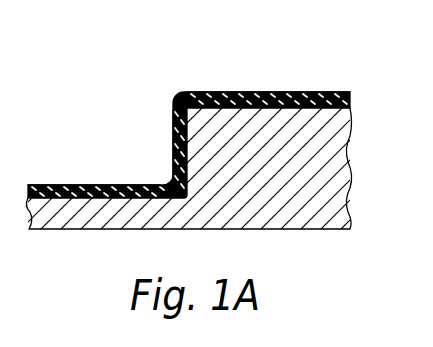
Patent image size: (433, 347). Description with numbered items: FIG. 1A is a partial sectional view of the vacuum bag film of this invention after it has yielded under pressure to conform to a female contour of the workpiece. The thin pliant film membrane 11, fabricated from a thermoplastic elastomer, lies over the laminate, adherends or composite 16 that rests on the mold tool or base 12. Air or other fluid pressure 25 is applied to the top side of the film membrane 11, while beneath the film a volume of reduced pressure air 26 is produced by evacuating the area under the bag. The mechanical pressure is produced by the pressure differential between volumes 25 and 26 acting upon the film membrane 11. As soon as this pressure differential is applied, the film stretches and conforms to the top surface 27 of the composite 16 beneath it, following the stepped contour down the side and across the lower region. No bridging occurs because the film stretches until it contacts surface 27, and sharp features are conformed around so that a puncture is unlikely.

The mold tool 12 is at (341, 155).
The top surface 27 is at (275, 92).
The volume of reduced pressure air 26 is at (349, 102).
The film membrane 11 is at (172, 131).
The composite 16 is at (80, 185).
The fluid pressure 25 is at (168, 15).